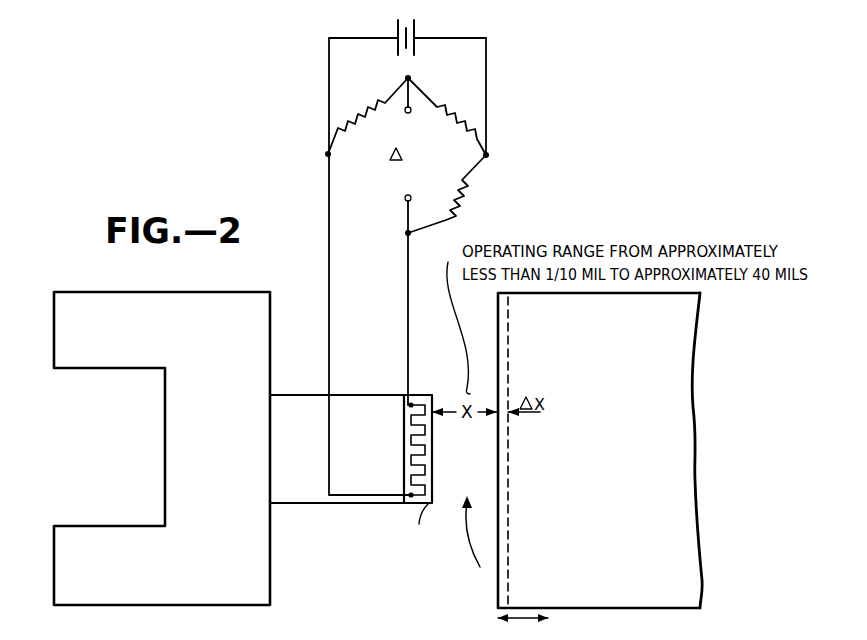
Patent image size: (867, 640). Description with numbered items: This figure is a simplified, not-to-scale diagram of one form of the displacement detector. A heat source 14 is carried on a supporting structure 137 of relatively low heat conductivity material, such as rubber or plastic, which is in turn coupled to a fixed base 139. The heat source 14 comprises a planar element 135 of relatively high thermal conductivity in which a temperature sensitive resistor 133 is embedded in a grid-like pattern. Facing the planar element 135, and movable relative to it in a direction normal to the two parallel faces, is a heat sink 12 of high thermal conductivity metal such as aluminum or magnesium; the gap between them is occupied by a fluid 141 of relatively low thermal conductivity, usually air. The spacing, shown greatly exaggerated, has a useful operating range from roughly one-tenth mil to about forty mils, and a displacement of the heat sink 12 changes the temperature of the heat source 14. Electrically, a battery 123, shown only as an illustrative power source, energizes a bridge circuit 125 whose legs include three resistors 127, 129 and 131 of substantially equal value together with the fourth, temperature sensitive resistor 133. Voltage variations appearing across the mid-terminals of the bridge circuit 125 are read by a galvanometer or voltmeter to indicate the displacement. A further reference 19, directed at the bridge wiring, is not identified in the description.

The heat sink 12 is at (620, 451).
The heat source 14 is at (418, 390).
The sensing circuit leads 19 is at (284, 158).
The battery 123 is at (411, 26).
The bridge circuit 125 is at (372, 210).
The resistor 127 is at (386, 102).
The resistor 129 is at (440, 106).
The resistor 131 is at (442, 208).
The temperature sensitive resistor 133 is at (427, 430).
The planar element 135 is at (414, 525).
The supporting structure 137 is at (316, 448).
The fixed base 139 is at (231, 448).
The fluid 141 is at (456, 616).